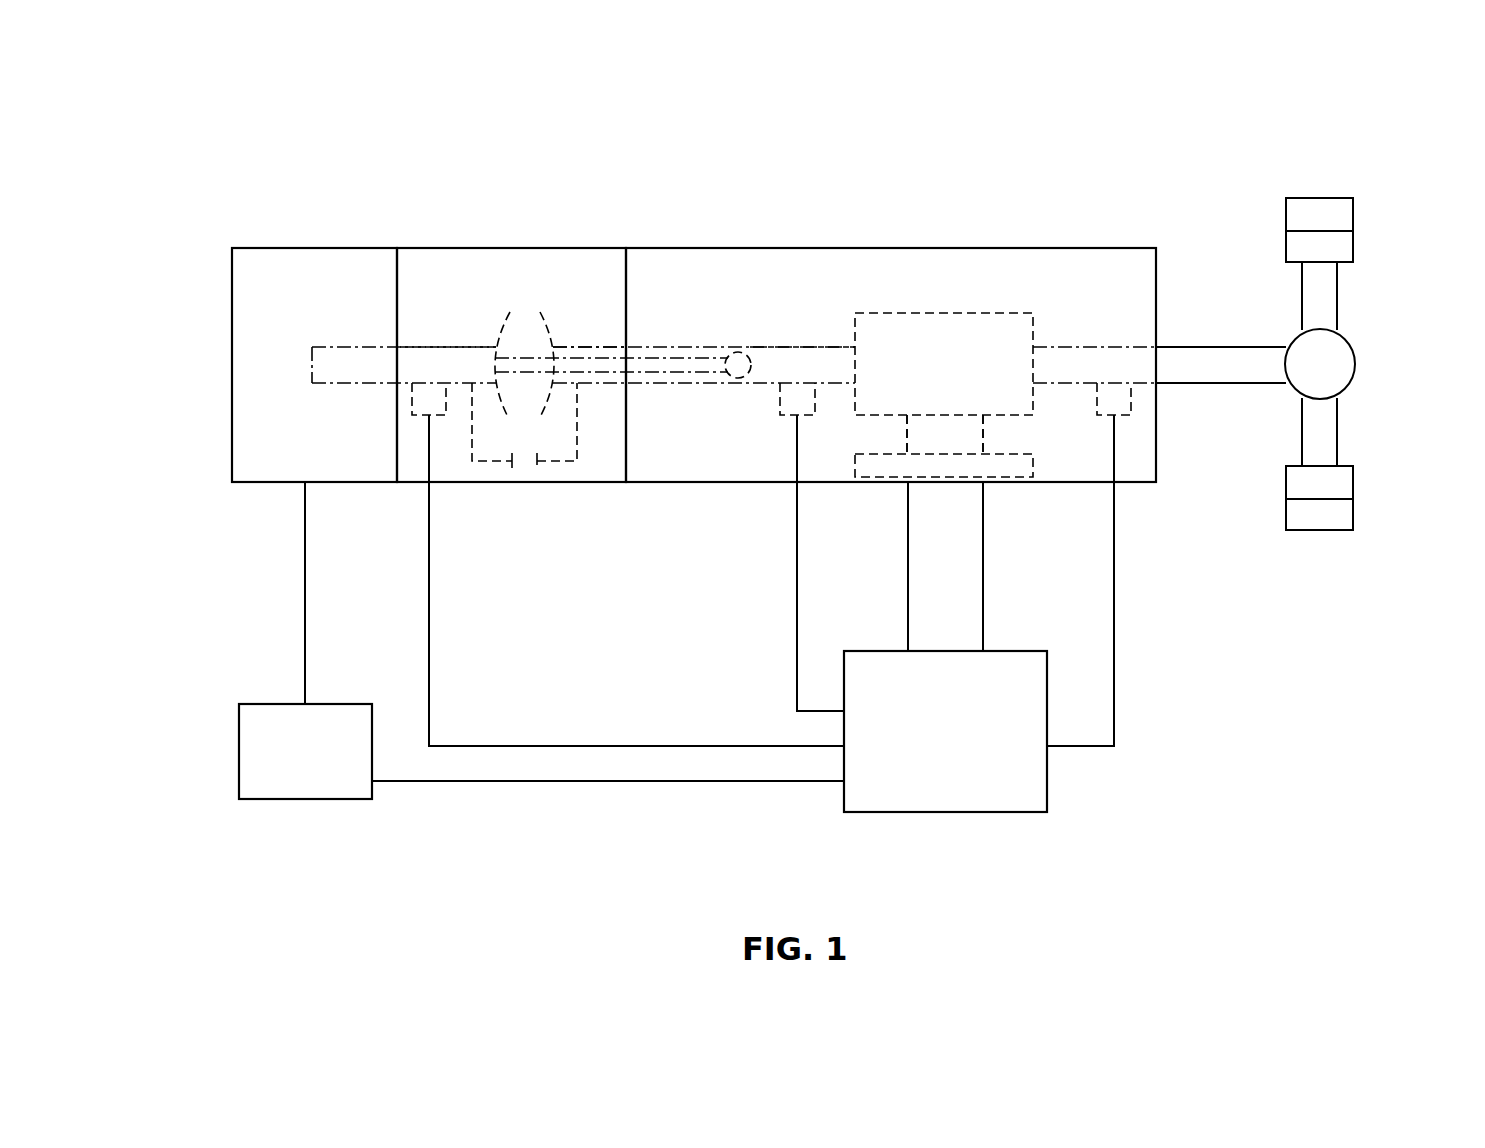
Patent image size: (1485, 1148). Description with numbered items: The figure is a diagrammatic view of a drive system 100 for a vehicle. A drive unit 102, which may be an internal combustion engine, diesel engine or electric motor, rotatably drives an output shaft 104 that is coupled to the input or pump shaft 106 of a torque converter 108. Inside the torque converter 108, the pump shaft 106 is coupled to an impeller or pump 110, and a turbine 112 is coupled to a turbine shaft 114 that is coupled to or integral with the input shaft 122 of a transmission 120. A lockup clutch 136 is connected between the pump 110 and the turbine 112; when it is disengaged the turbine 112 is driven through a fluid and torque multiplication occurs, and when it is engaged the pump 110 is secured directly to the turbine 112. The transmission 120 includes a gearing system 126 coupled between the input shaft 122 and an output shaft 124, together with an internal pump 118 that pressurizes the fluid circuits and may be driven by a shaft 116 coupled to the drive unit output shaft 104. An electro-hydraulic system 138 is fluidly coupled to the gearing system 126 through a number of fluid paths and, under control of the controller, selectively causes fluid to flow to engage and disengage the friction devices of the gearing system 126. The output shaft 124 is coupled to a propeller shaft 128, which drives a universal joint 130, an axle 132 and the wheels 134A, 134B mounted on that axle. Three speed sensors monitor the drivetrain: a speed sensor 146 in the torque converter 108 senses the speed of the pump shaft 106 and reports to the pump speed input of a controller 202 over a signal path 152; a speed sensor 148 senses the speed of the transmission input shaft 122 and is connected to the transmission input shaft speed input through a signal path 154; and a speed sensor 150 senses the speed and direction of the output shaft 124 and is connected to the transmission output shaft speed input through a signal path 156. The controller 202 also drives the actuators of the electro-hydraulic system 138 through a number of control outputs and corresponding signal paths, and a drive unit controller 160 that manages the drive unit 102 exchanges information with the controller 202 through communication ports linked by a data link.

The drive system 100 is at (223, 86).
The drive unit 102 is at (308, 249).
The output shaft 104 is at (343, 347).
The pump shaft 106 is at (447, 347).
The torque converter 108 is at (519, 248).
The pump 110 is at (498, 332).
The turbine 112 is at (553, 332).
The turbine shaft 114 is at (590, 347).
The shaft 116 is at (660, 374).
The internal pump 118 is at (735, 352).
The transmission 120 is at (920, 248).
The input shaft 122 is at (810, 347).
The output shaft 124 is at (1095, 347).
The gearing system 126 is at (972, 380).
The propeller shaft 128 is at (1220, 347).
The universal joint 130 is at (1355, 364).
The axle 132 is at (1340, 302).
The wheel 134A is at (1320, 198).
The wheel 134B is at (1320, 530).
The lockup clutch 136 is at (537, 463).
The electro-hydraulic system 138 is at (1008, 477).
The speed sensor 146 is at (412, 400).
The speed sensor 148 is at (778, 400).
The speed sensor 150 is at (1131, 400).
The signal path 152 is at (553, 746).
The signal path 154 is at (797, 605).
The signal path 156 is at (1114, 600).
The drive unit controller 160 is at (255, 703).
The controller 202 is at (945, 812).